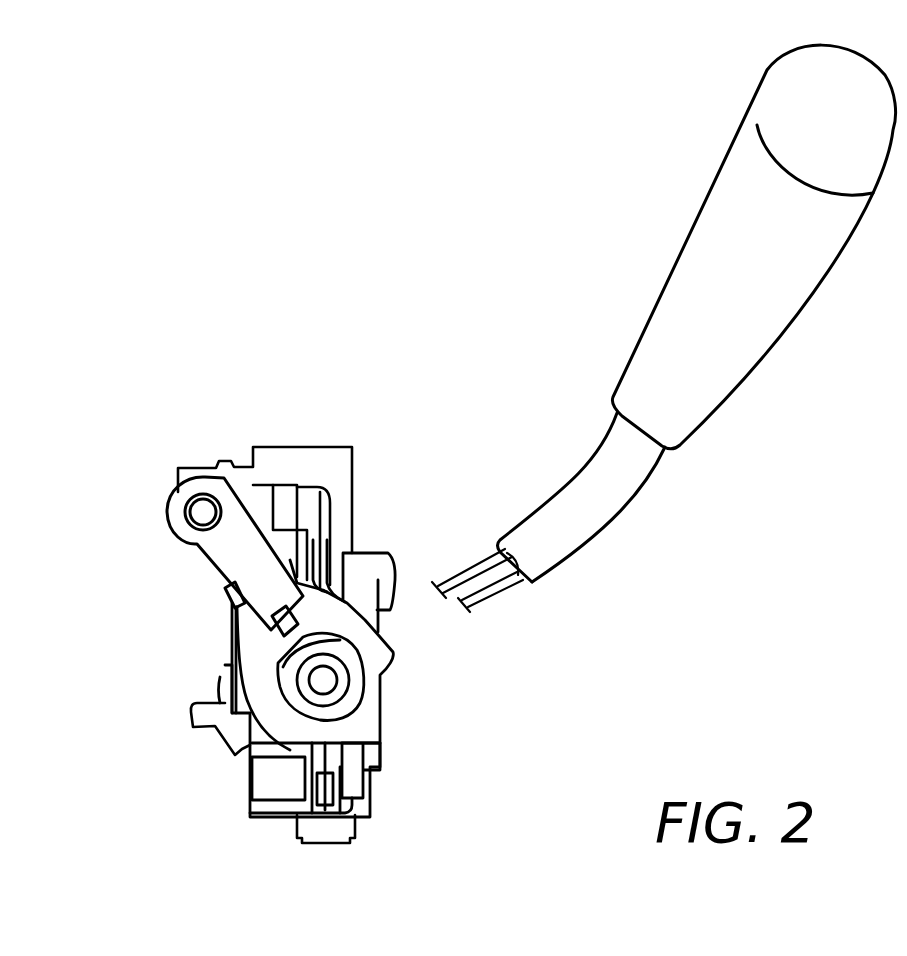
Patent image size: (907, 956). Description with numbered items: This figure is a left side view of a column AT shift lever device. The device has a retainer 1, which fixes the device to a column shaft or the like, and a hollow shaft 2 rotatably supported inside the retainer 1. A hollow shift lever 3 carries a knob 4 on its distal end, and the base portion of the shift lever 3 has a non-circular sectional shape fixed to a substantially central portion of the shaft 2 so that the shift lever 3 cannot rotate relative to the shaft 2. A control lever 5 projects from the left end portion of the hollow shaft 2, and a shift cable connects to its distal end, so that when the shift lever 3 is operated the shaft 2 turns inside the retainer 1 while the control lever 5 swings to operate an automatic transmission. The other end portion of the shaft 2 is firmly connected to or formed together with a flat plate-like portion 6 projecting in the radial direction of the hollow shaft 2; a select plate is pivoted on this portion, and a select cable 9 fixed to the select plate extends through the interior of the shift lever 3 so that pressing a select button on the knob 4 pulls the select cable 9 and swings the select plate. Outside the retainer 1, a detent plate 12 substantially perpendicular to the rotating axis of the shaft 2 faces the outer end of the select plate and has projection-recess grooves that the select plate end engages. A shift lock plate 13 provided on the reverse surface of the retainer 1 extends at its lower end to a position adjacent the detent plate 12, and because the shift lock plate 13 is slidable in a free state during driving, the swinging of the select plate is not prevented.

The retainer 1 is at (372, 728).
The shaft 2 is at (352, 673).
The shift lever 3 is at (610, 502).
The knob 4 is at (732, 362).
The control lever 5 is at (181, 535).
The flat plate-like portion 6 is at (328, 830).
The select cable 9 is at (448, 583).
The detent plate 12 is at (227, 723).
The shift lock plate 13 is at (242, 470).